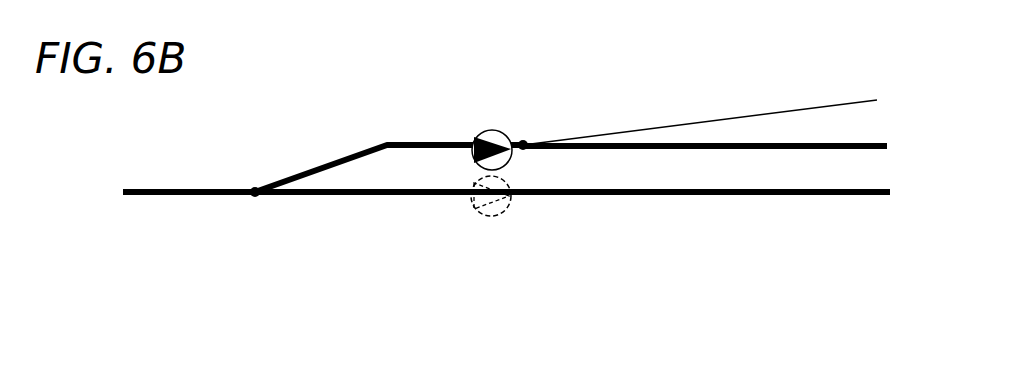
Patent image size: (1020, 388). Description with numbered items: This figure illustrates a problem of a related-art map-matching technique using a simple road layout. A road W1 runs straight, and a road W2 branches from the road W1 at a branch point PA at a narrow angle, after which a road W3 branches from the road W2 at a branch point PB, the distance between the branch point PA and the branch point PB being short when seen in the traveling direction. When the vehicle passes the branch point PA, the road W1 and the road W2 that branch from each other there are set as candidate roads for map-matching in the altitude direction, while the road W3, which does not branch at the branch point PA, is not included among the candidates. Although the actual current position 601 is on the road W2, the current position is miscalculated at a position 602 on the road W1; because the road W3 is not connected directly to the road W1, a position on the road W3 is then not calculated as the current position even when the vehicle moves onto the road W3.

The current position 601 is at (480, 130).
The miscalculated position 602 is at (495, 220).
The road W1 is at (203, 198).
The road W2 is at (427, 148).
The road W3 is at (852, 105).
The branch point PA is at (260, 198).
The branch point PB is at (527, 152).